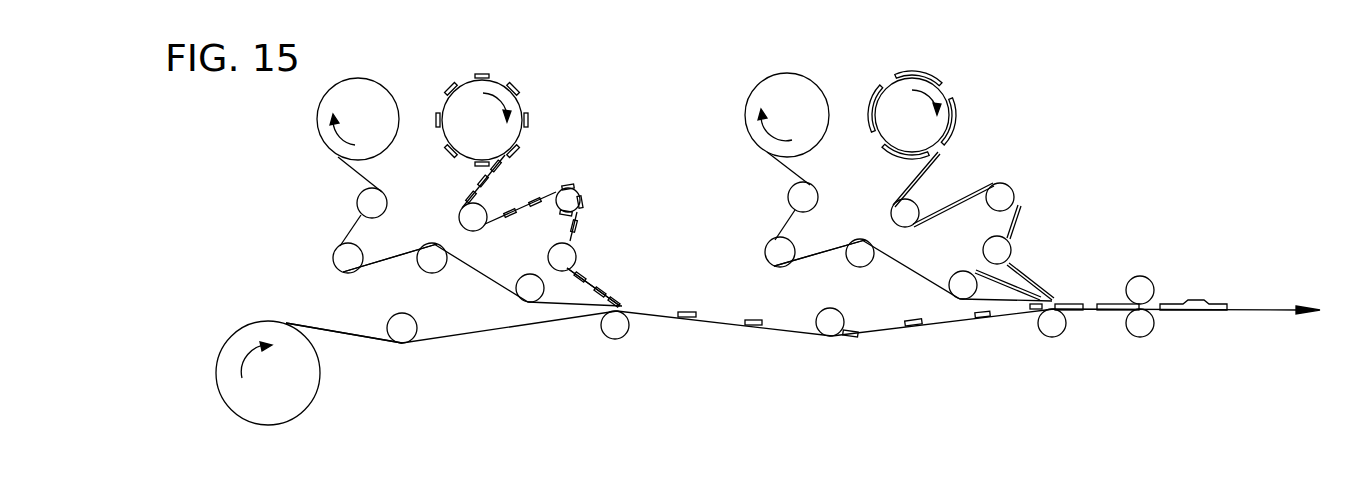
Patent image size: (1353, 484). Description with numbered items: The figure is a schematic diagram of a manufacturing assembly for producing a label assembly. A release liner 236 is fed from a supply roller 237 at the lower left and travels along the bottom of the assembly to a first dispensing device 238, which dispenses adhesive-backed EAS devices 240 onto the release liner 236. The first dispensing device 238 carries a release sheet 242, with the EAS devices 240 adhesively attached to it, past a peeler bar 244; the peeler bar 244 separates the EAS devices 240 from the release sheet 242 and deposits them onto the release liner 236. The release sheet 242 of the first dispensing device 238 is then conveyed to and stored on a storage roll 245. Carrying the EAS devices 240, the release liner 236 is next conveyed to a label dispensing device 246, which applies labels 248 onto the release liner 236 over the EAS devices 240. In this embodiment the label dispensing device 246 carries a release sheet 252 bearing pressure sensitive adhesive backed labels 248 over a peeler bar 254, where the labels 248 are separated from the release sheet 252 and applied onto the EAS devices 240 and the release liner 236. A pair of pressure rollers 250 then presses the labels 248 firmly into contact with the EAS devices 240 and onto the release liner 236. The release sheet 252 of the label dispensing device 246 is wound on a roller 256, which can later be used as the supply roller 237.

The release liner 236 is at (288, 322).
The supply roller 237 is at (310, 385).
The first dispensing device 238 is at (528, 144).
The EAS devices 240 is at (560, 189).
The release sheet 242 is at (400, 250).
The peeler bar 244 is at (592, 299).
The storage roll 245 is at (318, 124).
The label dispensing device 246 is at (978, 133).
The labels 248 is at (921, 181).
The pressure rollers 250 is at (1148, 280).
The release sheet 252 is at (825, 248).
The peeler bar 254 is at (976, 272).
The roller 256 is at (752, 100).